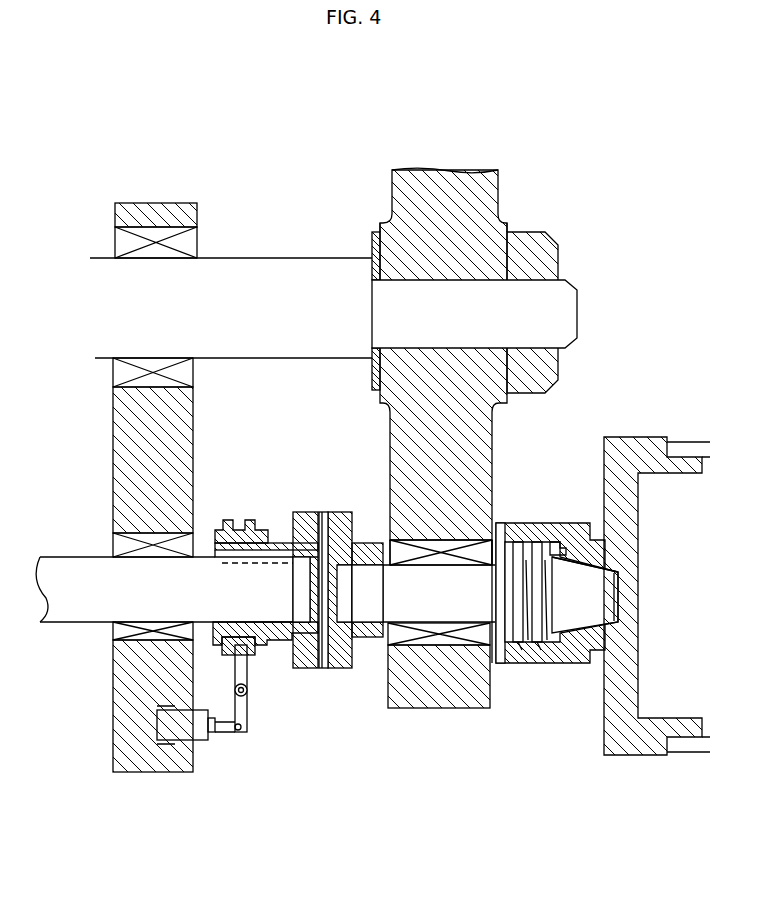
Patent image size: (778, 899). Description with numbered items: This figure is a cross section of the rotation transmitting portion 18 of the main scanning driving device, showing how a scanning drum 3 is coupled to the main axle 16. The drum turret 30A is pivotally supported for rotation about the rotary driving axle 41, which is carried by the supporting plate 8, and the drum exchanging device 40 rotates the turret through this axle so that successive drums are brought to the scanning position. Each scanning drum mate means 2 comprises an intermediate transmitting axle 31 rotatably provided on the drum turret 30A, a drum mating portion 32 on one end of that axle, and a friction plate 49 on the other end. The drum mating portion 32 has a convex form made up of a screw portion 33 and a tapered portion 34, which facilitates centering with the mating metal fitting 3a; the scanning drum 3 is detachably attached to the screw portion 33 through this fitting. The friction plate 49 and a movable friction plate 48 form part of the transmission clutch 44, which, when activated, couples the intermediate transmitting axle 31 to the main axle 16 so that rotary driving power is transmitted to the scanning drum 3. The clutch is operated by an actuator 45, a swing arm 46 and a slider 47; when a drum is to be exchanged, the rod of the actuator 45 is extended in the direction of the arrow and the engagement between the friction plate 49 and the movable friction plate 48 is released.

The scanning drum mate means 2 is at (444, 762).
The scanning drum 3 is at (690, 442).
The mating metal fitting 3a is at (542, 526).
The supporting plate 8 is at (113, 450).
The main axle 16 is at (72, 557).
The rotation transmitting portion 18 is at (270, 595).
The drum turret 30A is at (432, 710).
The intermediate transmitting axle 31 is at (437, 578).
The drum mating portion 32 is at (557, 626).
The screw portion 33 is at (522, 655).
The tapered portion 34 is at (585, 628).
The drum exchanging device 40 is at (246, 240).
The rotary driving axle 41 is at (283, 258).
The transmission clutch 44 is at (304, 722).
The actuator 45 is at (206, 742).
The swing arm 46 is at (250, 728).
The slider 47 is at (255, 655).
The movable friction plate 48 is at (304, 668).
The friction plate 49 is at (340, 668).